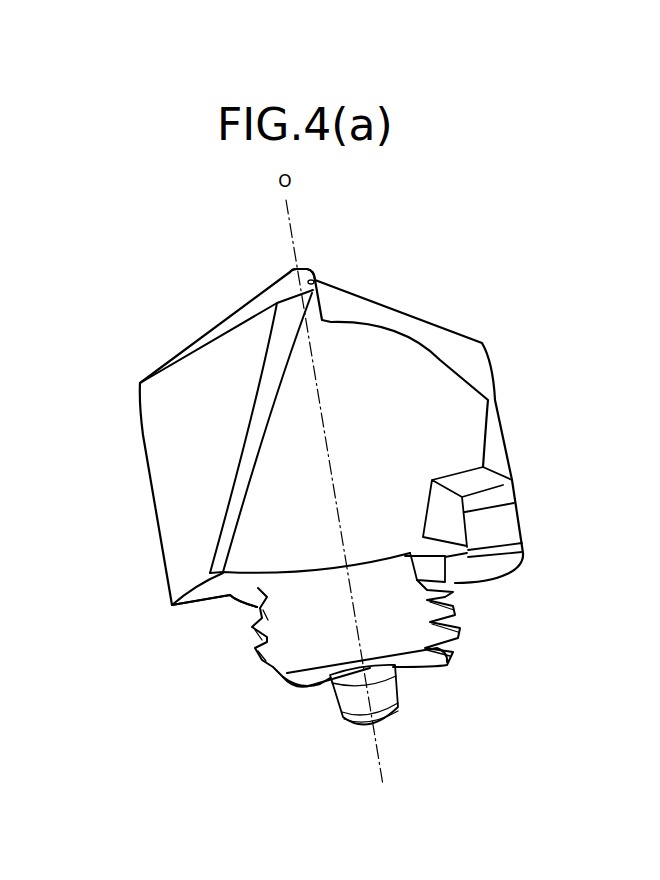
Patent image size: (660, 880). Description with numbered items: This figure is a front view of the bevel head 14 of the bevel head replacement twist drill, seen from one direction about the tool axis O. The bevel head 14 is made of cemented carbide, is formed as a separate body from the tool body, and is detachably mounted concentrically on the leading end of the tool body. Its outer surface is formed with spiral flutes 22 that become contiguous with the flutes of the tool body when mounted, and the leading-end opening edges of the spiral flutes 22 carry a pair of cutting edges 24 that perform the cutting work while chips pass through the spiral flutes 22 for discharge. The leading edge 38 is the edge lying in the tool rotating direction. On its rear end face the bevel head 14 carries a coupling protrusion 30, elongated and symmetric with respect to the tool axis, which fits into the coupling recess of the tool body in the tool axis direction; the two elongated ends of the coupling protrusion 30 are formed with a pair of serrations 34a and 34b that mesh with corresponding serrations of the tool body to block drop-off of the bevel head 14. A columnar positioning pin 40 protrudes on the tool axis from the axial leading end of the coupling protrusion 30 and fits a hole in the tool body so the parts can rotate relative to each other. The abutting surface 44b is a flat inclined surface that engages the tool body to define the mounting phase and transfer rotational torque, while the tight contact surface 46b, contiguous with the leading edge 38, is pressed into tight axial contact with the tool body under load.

The bevel head 14 is at (495, 318).
The cutting edges 24 is at (315, 281).
The spiral flutes 22 is at (373, 438).
The leading edge 38 is at (254, 437).
The abutting surface 44b is at (503, 528).
The tight contact surface 46b is at (490, 572).
The serration 34a is at (248, 656).
The serration 34b is at (478, 622).
The coupling protrusion 30 is at (318, 642).
The positioning pin 40 is at (387, 692).